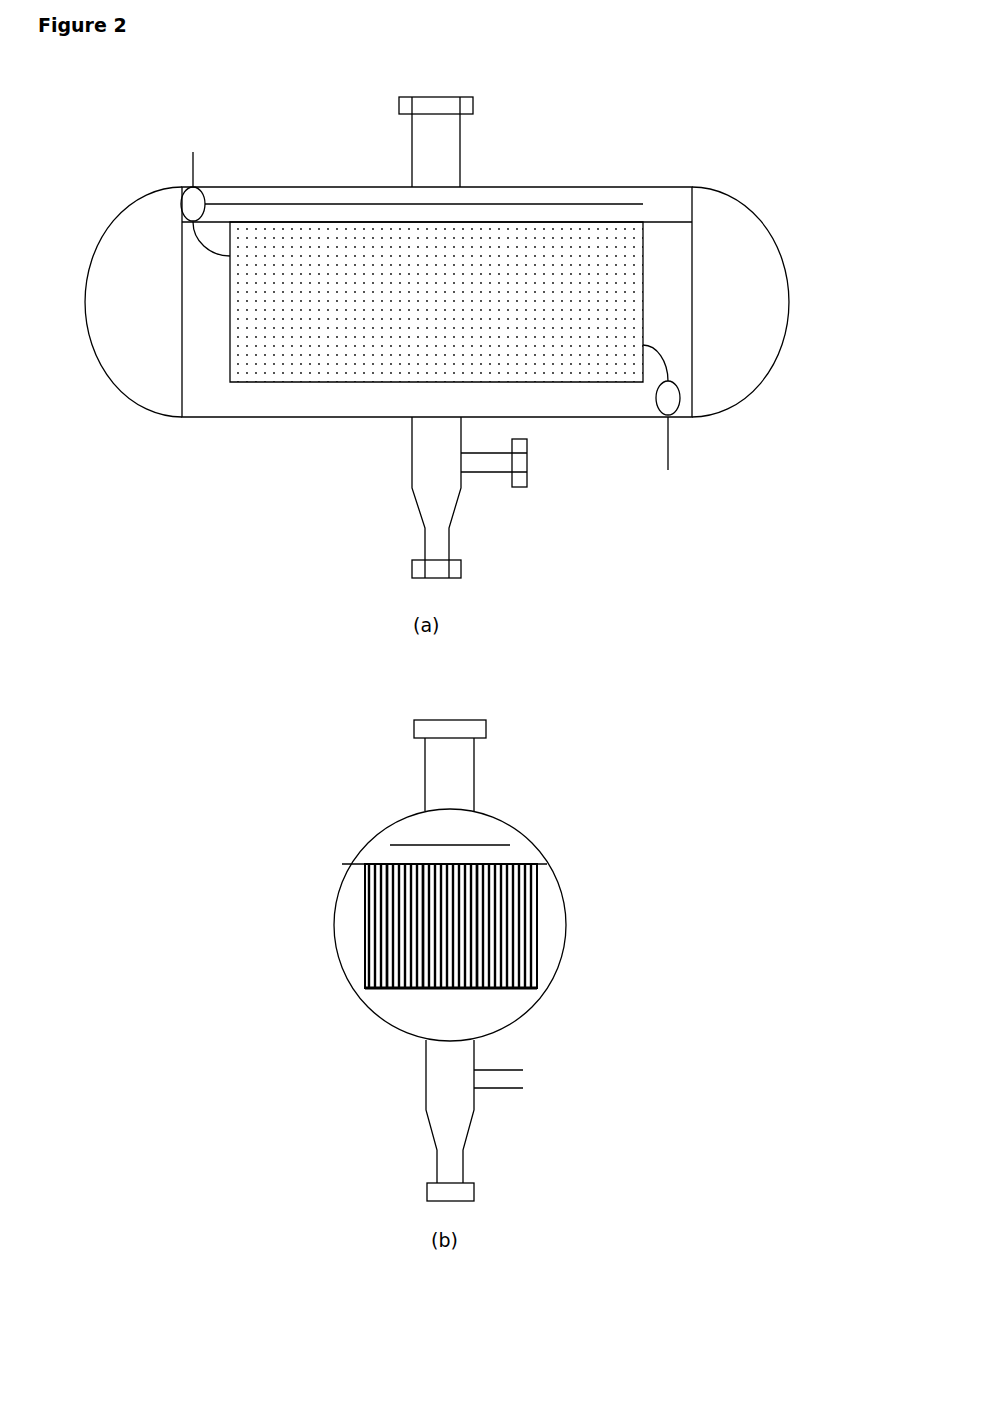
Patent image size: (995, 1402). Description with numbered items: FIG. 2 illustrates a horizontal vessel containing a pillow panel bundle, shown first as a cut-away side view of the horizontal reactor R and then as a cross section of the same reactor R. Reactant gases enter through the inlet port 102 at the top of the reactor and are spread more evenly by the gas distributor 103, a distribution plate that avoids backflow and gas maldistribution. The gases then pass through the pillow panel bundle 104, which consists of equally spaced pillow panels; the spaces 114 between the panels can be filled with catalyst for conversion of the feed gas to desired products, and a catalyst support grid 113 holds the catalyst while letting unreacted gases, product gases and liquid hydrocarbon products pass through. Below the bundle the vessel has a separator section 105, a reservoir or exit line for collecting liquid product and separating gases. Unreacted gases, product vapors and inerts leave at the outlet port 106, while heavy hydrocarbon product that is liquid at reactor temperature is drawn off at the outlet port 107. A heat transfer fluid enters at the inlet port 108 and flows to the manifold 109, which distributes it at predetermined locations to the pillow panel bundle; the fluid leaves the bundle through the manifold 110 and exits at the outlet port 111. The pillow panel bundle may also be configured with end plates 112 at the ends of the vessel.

The horizontal reactor R is at (699, 137).
The inlet port 102 is at (489, 115).
The gas distributor 103 is at (550, 202).
The pillow panel bundle 104 is at (667, 220).
The separator section 105 is at (402, 447).
The outlet port 106 is at (533, 488).
The outlet port 107 is at (407, 580).
The inlet port 108 is at (678, 467).
The manifold 109 is at (688, 415).
The manifold 110 is at (193, 197).
The outlet port 111 is at (198, 158).
The end plates 112 is at (180, 303).
The catalyst support grid 113 is at (523, 987).
The spaces 114 is at (480, 967).